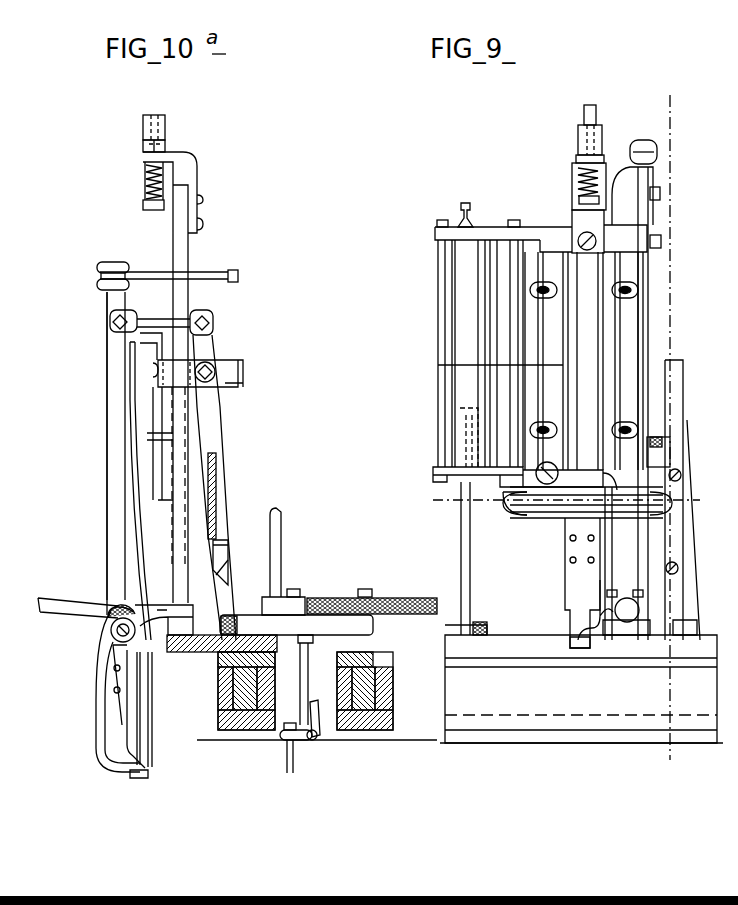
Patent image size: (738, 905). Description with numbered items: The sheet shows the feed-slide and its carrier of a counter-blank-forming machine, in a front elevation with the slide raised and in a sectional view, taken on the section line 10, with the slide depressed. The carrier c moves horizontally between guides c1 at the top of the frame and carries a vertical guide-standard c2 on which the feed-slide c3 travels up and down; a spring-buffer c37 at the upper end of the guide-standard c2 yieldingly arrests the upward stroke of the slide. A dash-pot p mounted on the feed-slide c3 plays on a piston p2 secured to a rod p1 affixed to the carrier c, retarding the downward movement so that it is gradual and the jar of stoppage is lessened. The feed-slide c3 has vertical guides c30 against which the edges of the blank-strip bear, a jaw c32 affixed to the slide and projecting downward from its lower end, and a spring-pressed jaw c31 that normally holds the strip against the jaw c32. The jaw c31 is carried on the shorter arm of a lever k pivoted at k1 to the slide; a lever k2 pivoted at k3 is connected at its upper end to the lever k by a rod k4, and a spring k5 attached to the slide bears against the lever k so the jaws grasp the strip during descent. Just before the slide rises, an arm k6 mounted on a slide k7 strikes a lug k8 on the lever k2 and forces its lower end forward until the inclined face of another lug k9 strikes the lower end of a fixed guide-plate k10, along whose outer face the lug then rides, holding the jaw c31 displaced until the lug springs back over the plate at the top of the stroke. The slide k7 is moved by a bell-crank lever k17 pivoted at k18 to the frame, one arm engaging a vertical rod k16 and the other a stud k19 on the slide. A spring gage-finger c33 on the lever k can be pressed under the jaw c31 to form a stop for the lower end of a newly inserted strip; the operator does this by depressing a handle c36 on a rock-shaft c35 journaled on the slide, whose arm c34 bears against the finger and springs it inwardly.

In FIG. 10a, the spring-buffer c37 is at (142, 178).
In FIG. 9, the spring-buffer c37 is at (576, 180).
In FIG. 10a, the vertical guide-standard c2 is at (178, 248).
In FIG. 9, the vertical guide-standard c2 is at (565, 583).
In FIG. 10a, the rod k4 is at (152, 320).
In FIG. 10a, the pivot k3 is at (213, 368).
In FIG. 10a, the lever k2 is at (214, 400).
In FIG. 10a, the spring k5 is at (133, 408).
In FIG. 10a, the lever k is at (124, 505).
In FIG. 10a, the feed-slide c3 is at (186, 437).
In FIG. 9, the feed-slide c3 is at (592, 347).
In FIG. 10a, the fixed guide-plate k10 is at (217, 476).
In FIG. 10a, the lug k8 is at (244, 588).
In FIG. 10a, the arm k6 is at (282, 531).
In FIG. 10a, the lug k9 is at (246, 634).
In FIG. 10a, the slide k7 is at (368, 636).
In FIG. 10a, the pivot k1 is at (110, 632).
In FIG. 10a, the arm c34 is at (98, 690).
In FIG. 9, the arm c34 is at (600, 640).
In FIG. 10a, the spring-pressed jaw c31 is at (137, 723).
In FIG. 10a, the jaw c32 is at (152, 735).
In FIG. 10a, the spring gage-finger c33 is at (135, 778).
In FIG. 9, the spring gage-finger c33 is at (580, 650).
In FIG. 10a, the guides c1 is at (410, 680).
In FIG. 10a, the carrier c is at (248, 703).
In FIG. 9, the carrier c is at (502, 648).
In FIG. 10a, the stud k19 is at (297, 680).
In FIG. 10a, the bell-crank lever k17 is at (318, 712).
In FIG. 10a, the pivot k18 is at (312, 740).
In FIG. 10a, the vertical rod k16 is at (287, 768).
In FIG. 9, the section line 10 is at (669, 430).
In FIG. 9, the dash-pot p is at (466, 312).
In FIG. 9, the piston p2 is at (480, 418).
In FIG. 9, the vertical guides c30 is at (605, 307).
In FIG. 9, the rock-shaft c35 is at (590, 484).
In FIG. 9, the rod p1 is at (467, 508).
In FIG. 9, the handle c36 is at (545, 478).